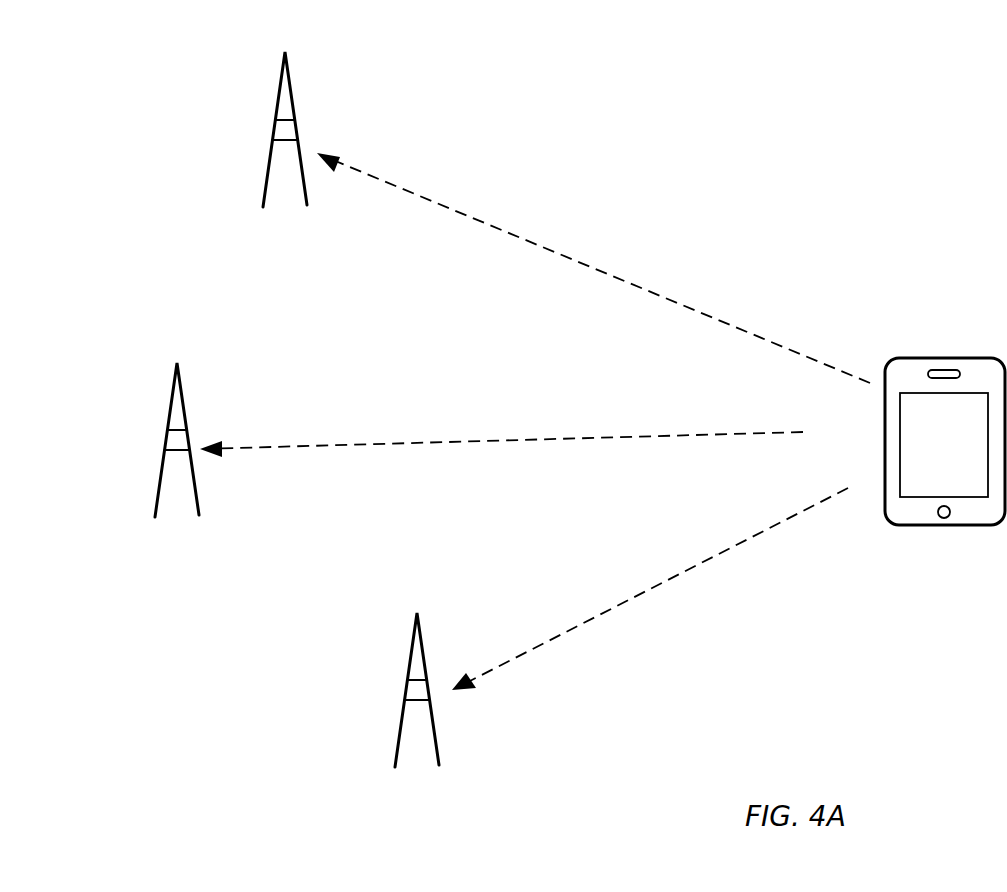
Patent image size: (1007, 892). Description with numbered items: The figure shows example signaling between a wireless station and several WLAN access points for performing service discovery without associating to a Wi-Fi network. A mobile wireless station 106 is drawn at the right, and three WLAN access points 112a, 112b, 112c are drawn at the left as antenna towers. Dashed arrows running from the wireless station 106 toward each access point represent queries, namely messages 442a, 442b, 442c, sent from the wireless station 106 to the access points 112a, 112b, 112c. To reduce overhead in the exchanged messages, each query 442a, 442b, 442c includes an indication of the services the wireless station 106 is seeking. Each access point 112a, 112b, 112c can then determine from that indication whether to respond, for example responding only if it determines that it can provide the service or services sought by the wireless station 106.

The access point 112a is at (305, 210).
The access point 112b is at (197, 518).
The access point 112c is at (437, 768).
The wireless station 106 is at (944, 526).
The message 442a is at (587, 267).
The message 442b is at (587, 437).
The message 442c is at (702, 575).